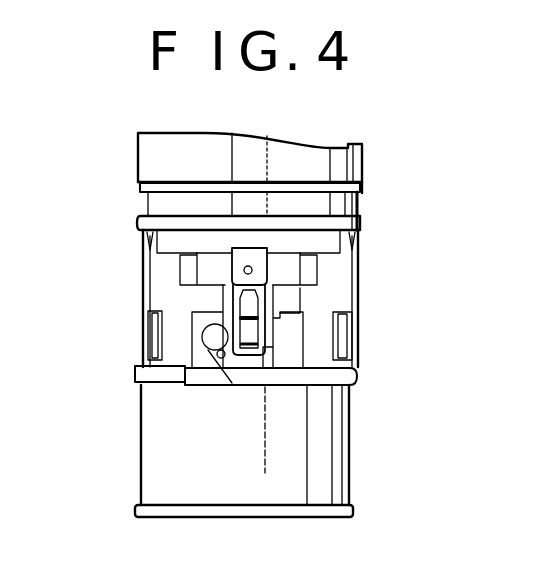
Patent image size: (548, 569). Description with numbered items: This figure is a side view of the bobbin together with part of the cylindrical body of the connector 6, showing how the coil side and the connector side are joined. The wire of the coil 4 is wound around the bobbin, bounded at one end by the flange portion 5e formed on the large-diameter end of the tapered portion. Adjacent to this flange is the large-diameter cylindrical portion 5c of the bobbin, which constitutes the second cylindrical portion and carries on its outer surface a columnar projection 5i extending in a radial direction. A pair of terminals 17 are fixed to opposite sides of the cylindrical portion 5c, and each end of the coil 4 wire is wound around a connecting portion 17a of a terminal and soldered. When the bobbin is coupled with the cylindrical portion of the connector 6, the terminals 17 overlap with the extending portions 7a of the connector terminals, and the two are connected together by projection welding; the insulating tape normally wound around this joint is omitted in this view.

The coil 4 is at (317, 457).
The large-diameter cylindrical portion 5c is at (173, 327).
The flange portion 5e is at (335, 379).
The columnar projection 5i is at (213, 355).
The connector 6 is at (148, 163).
The extending portion 7a is at (240, 255).
The terminal 17 is at (287, 273).
The connecting portion 17a is at (248, 333).